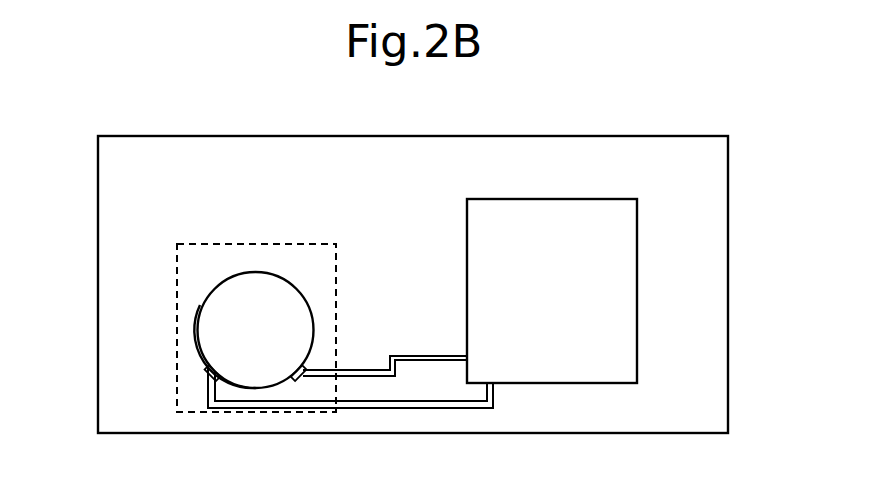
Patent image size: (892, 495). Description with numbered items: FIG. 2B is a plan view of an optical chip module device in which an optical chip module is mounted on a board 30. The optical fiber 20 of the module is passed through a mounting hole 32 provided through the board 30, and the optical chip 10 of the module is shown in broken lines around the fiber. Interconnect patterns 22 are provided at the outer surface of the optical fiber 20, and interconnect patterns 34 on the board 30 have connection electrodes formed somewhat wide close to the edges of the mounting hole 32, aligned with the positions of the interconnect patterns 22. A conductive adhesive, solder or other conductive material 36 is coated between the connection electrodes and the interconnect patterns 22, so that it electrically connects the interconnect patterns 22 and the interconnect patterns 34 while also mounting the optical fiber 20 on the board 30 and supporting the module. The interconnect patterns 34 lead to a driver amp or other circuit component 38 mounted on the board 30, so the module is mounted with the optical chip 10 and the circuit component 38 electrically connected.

The optical chip 10 is at (185, 270).
The optical fiber 20 is at (289, 302).
The interconnect patterns 22 is at (304, 380).
The board 30 is at (649, 173).
The mounting hole 32 is at (197, 322).
The interconnect patterns 34 is at (365, 380).
The conductive material 36 is at (200, 368).
The circuit component 38 is at (622, 268).